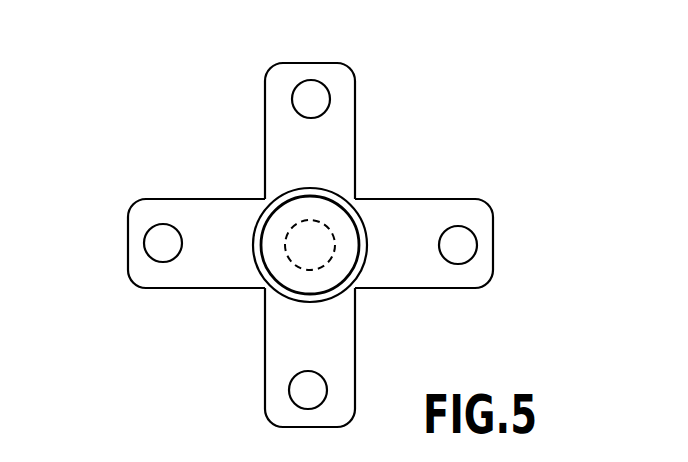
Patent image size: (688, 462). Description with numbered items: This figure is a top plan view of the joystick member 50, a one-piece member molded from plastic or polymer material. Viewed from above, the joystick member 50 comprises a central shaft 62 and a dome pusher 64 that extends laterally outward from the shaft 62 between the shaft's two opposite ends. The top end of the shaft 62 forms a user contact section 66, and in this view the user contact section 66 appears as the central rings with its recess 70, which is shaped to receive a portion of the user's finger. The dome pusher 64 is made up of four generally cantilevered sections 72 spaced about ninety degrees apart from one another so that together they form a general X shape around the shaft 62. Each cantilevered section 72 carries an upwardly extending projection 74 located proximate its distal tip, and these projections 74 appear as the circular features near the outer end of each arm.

The joystick member 50 is at (146, 86).
The shaft 62 is at (254, 258).
The dome pusher 64 is at (356, 144).
The user contact section 66 is at (285, 245).
The recess 70 is at (325, 273).
The cantilevered sections 72 is at (457, 289).
The upwardly extending projection 74 is at (465, 247).